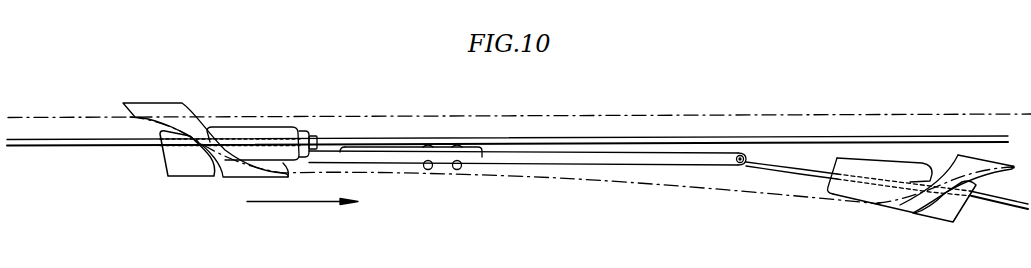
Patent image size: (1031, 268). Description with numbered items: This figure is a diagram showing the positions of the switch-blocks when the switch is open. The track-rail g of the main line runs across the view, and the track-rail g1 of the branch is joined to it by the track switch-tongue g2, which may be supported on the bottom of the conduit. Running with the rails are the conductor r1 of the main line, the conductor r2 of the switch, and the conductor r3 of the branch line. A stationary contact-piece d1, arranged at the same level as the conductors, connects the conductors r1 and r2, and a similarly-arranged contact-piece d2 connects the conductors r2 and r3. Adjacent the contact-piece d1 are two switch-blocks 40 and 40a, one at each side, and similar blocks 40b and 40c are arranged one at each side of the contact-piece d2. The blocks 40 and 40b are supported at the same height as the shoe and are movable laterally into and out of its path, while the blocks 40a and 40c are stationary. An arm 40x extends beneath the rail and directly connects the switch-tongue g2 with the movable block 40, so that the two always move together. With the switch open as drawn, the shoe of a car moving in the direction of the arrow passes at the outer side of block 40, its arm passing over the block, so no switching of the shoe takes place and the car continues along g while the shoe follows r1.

The track-rail of the main line g is at (57, 143).
The track-rail of the branch g1 is at (1004, 196).
The track switch-tongue g2 is at (483, 159).
The conductor of the main line r1 is at (572, 115).
The conductor of the switch r2 is at (575, 179).
The conductor of the branch line r3 is at (1006, 171).
The stationary contact-piece d1 is at (159, 109).
The contact-piece d2 is at (878, 208).
The switch-block 40 is at (268, 135).
The switch-block 40a is at (184, 160).
The switch-block 40b is at (893, 171).
The switch-block 40c is at (942, 210).
The arm 40x is at (343, 156).